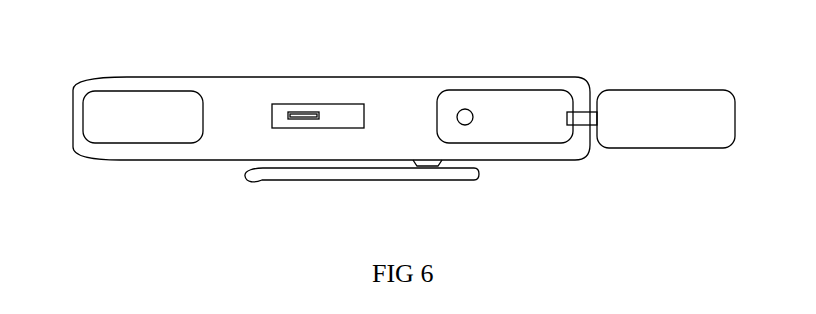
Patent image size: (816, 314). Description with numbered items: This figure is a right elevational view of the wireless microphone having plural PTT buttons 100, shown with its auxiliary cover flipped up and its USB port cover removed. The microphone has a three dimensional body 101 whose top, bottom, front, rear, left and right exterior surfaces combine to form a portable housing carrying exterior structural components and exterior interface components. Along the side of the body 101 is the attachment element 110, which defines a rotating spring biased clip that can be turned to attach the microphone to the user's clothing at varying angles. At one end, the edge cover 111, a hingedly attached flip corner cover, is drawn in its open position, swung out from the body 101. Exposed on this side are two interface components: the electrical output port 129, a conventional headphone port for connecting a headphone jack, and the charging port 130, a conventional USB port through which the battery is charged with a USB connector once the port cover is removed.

The wireless microphone having plural PTT buttons 100 is at (407, 65).
The body 101 is at (157, 160).
The attachment element 110 is at (313, 180).
The edge cover 111 is at (660, 132).
The electrical output port 129 is at (473, 121).
The charging port 130 is at (297, 107).